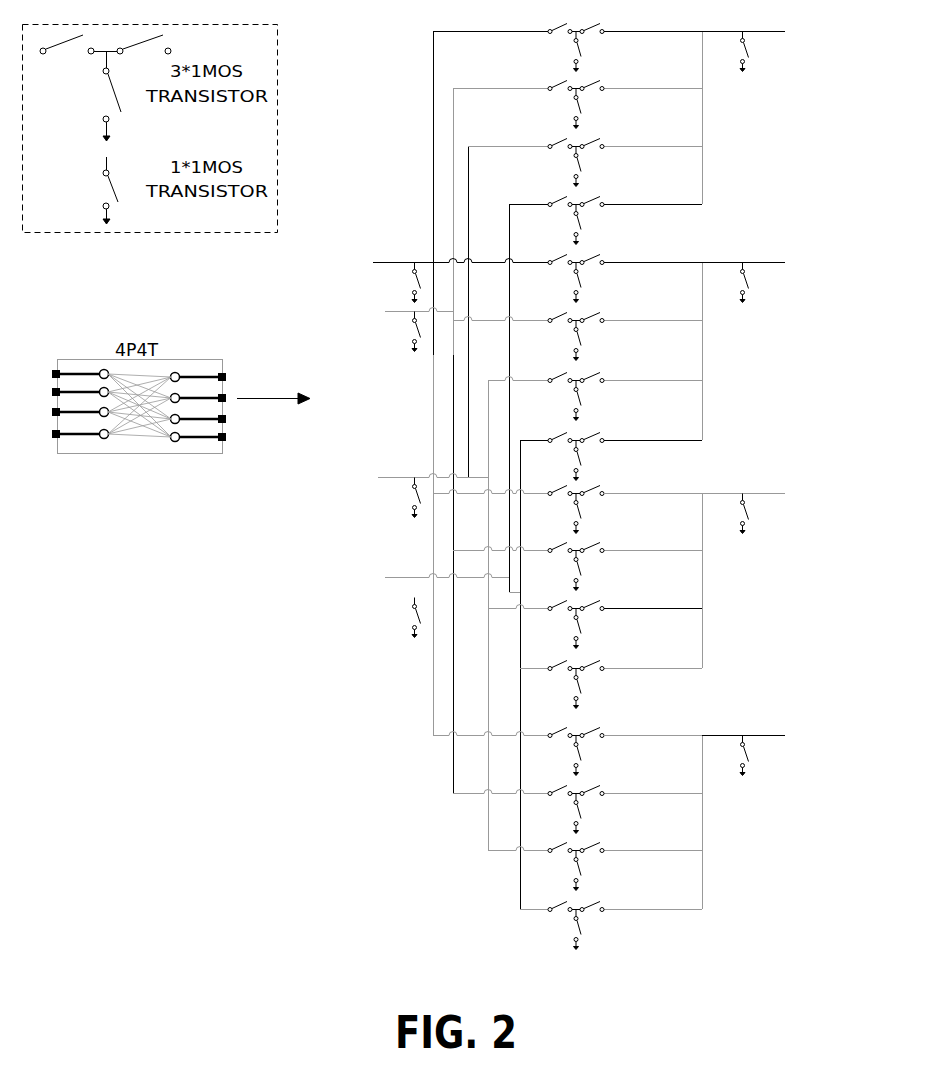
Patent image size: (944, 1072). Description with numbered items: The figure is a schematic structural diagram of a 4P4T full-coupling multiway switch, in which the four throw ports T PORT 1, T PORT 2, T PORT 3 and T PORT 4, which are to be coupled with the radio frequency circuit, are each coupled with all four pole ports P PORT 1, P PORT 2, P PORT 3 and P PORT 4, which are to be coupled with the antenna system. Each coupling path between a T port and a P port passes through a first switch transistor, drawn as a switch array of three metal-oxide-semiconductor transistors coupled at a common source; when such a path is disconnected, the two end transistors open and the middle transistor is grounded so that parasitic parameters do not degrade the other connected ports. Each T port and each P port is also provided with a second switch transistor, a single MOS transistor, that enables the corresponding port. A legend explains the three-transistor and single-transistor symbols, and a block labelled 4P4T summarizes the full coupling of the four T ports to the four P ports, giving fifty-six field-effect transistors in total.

The port 1 (T PORT 1 / P PORT 1) 1 is at (573, 161).
The port 2 (T PORT 2 / P PORT 2) 2 is at (576, 302).
The port 3 (T PORT 3 / P PORT 3) 3 is at (582, 501).
The port 4 (T PORT 4 / P PORT 4) 4 is at (579, 672).